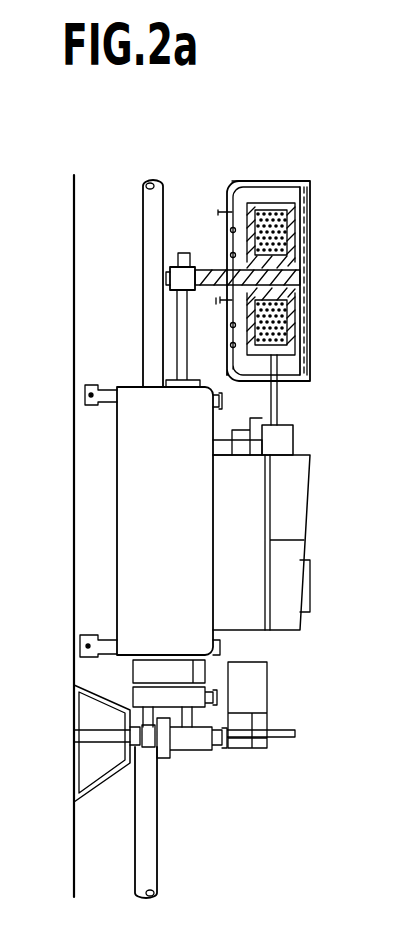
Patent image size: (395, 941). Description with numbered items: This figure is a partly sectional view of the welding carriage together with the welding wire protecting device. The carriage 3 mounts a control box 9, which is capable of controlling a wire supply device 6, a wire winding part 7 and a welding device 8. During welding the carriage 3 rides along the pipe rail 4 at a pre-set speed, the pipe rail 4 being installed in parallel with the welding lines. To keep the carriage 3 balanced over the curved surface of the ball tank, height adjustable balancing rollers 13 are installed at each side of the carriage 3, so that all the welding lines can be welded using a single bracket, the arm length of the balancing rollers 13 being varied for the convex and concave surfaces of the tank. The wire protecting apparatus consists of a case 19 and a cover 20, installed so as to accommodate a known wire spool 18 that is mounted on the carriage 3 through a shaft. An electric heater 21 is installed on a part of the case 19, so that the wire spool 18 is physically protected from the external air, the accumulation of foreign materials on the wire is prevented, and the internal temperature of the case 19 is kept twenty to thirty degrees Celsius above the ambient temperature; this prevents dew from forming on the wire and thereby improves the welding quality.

The carriage 3 is at (308, 545).
The pipe rail 4 is at (148, 833).
The wire supply device 6 is at (284, 430).
The wire winding part 7 is at (308, 300).
The welding device 8 is at (80, 738).
The control box 9 is at (293, 598).
The balancing roller 13 is at (88, 395).
The wire spool 18 is at (295, 212).
The case 19 is at (244, 180).
The cover 20 is at (308, 350).
The electric heater 21 is at (230, 230).